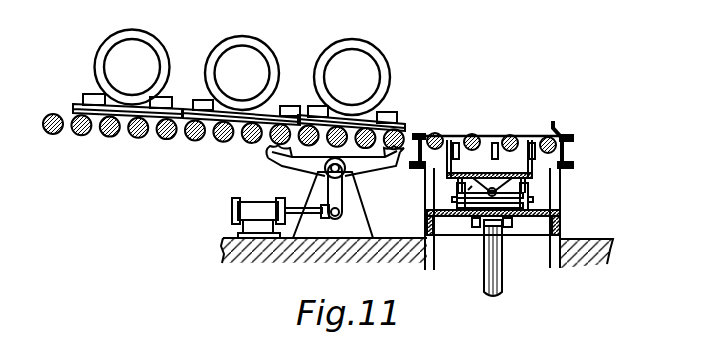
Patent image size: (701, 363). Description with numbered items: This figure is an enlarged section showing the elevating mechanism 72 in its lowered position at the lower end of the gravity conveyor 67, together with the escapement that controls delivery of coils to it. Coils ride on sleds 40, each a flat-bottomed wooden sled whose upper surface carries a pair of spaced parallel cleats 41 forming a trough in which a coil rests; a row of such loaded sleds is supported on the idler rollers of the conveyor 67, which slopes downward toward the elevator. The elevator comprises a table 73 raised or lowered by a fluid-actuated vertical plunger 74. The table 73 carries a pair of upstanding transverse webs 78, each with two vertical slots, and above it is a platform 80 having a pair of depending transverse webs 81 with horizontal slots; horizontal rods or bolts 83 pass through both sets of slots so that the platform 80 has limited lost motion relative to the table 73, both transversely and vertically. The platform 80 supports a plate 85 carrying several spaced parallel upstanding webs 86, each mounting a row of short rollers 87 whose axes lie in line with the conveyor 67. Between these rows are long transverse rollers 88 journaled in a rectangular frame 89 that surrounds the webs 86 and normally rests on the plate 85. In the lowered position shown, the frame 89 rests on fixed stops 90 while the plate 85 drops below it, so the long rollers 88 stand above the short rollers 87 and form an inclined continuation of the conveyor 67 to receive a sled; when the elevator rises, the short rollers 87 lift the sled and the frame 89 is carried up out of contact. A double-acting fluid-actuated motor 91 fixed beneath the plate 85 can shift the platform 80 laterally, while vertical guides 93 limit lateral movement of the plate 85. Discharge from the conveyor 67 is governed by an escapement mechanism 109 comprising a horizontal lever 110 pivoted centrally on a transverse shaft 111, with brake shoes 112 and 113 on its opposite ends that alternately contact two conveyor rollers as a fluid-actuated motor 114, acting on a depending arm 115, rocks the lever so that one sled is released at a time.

The sled 40 is at (300, 113).
The cleats 41 is at (168, 97).
The gravity conveyor 67 is at (193, 133).
The elevating mechanism 72 is at (475, 277).
The table 73 is at (563, 231).
The vertical plunger 74 is at (484, 283).
The upstanding transverse webs 78 is at (533, 205).
The platform 80 is at (465, 187).
The depending transverse webs 81 is at (527, 188).
The horizontal rods or bolts 83 is at (510, 217).
The plate 85 is at (495, 188).
The upstanding webs 86 is at (454, 152).
The short rollers 87 is at (497, 142).
The long transverse rollers 88 is at (476, 135).
The rectangular frame 89 is at (418, 135).
The fixed stops 90 is at (570, 169).
The double-acting fluid-actuated motor 91 is at (468, 190).
The vertical guides 93 is at (440, 268).
The escapement mechanism 109 is at (365, 195).
The horizontal lever 110 is at (284, 169).
The transverse shaft 111 is at (320, 172).
The brake shoe 112 is at (268, 152).
The brake shoe 113 is at (384, 153).
The fluid-actuated motor 114 is at (247, 200).
The arm 115 is at (350, 205).